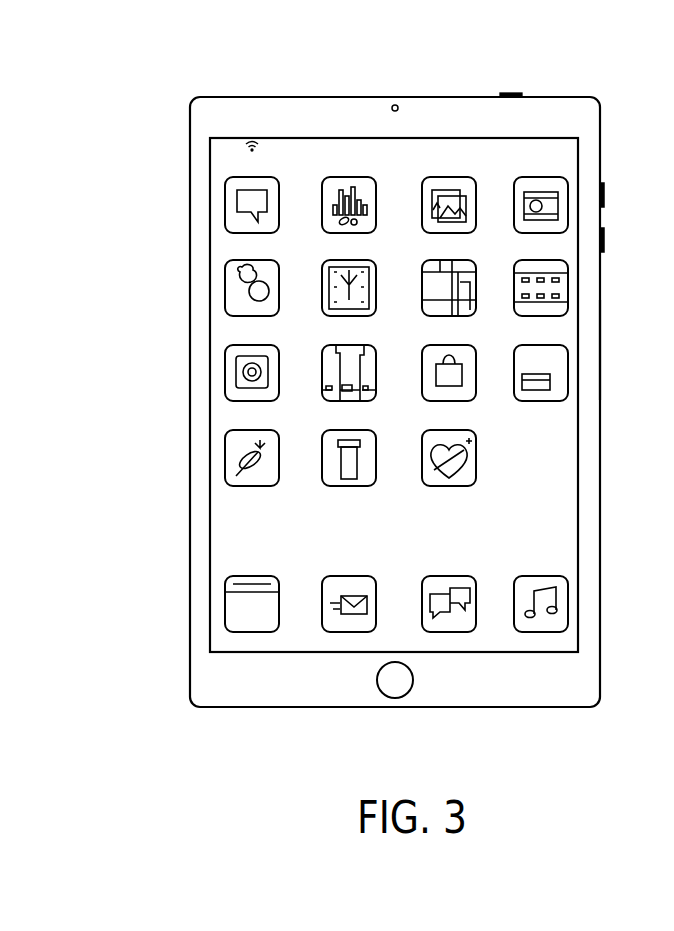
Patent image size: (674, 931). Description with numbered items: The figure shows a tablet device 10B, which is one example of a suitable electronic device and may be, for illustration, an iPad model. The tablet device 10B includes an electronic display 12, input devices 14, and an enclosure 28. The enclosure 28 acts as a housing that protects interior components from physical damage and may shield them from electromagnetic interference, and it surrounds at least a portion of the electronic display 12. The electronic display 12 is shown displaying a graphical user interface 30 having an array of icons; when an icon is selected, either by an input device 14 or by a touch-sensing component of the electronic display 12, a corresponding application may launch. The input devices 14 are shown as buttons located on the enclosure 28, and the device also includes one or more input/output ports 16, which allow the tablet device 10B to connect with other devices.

The tablet device 10B is at (199, 57).
The electronic display 12 is at (578, 395).
The input devices 14 is at (512, 94).
The input/output (I/O) ports 16 is at (268, 97).
The enclosure 28 is at (600, 346).
The graphical user interface (GUI) 30 is at (553, 477).